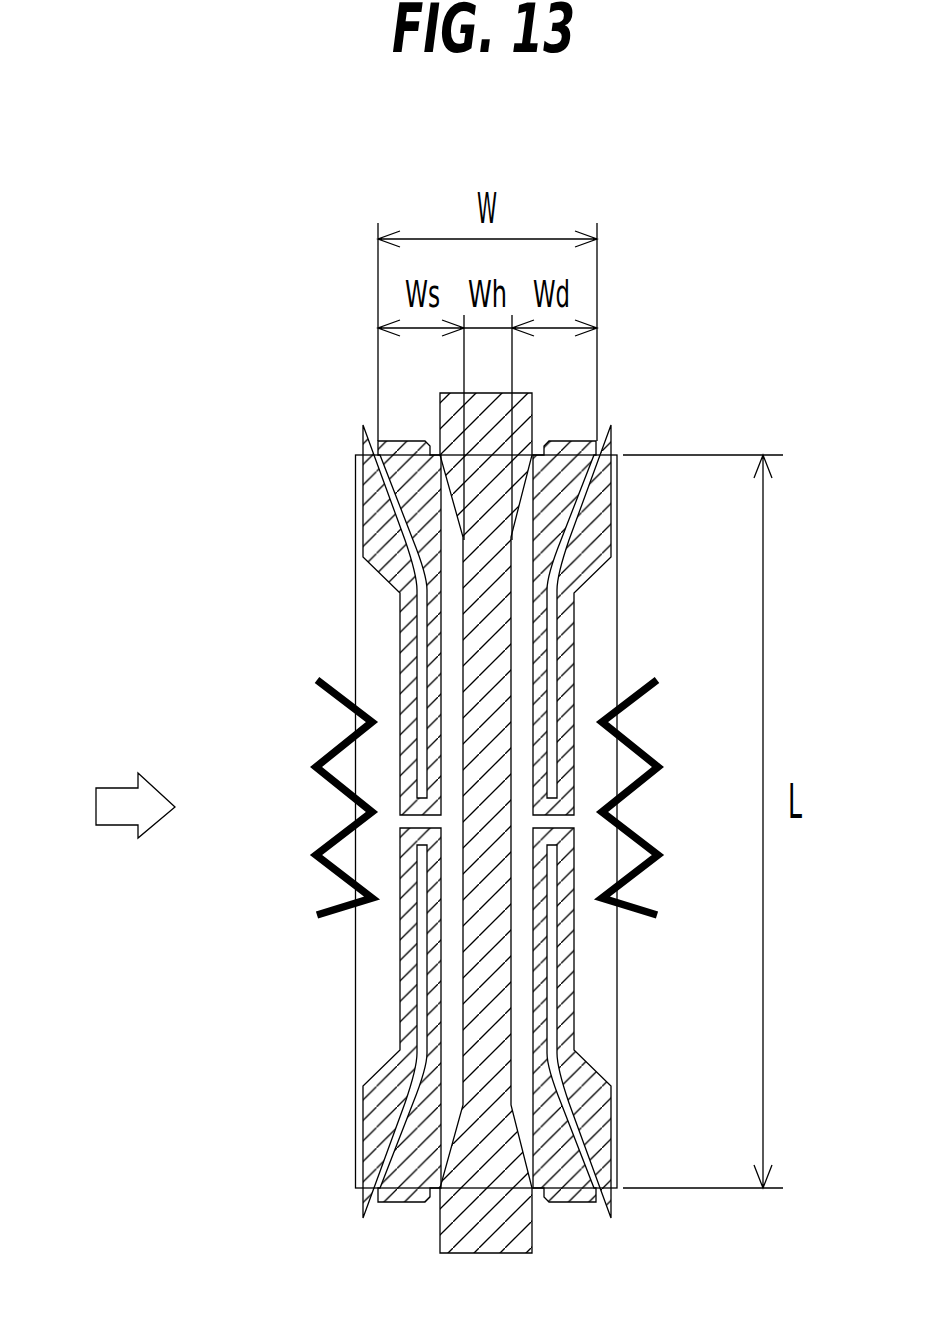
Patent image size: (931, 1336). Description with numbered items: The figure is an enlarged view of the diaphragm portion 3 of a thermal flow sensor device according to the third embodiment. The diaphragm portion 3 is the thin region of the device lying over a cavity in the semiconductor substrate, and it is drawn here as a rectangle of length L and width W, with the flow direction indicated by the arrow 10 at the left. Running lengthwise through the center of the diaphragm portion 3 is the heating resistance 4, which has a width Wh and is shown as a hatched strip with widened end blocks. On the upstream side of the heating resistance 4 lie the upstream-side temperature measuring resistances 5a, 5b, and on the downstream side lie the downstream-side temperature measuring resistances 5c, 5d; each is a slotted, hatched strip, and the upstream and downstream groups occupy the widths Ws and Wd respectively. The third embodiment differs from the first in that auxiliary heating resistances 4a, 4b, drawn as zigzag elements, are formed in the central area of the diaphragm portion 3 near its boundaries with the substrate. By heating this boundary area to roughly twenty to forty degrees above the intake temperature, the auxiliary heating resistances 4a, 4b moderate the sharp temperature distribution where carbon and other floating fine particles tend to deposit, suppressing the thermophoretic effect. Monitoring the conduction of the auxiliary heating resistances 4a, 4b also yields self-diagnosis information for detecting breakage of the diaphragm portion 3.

The diaphragm portion 3 is at (618, 578).
The heating resistance 4 is at (463, 655).
The auxiliary heating resistance 4a is at (327, 840).
The auxiliary heating resistance 4b is at (650, 840).
The upstream-side temperature measuring resistance 5a is at (398, 678).
The upstream-side temperature measuring resistance 5b is at (400, 990).
The downstream-side temperature measuring resistance 5c is at (575, 646).
The downstream-side temperature measuring resistance 5d is at (575, 997).
The force direction arrow 10 is at (112, 787).